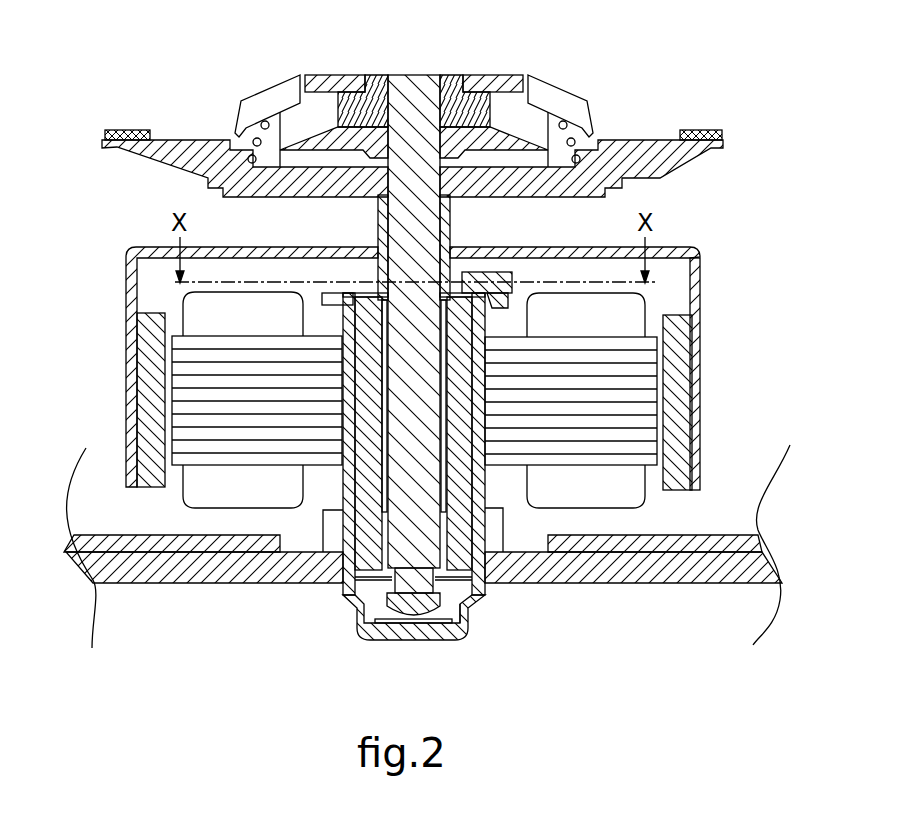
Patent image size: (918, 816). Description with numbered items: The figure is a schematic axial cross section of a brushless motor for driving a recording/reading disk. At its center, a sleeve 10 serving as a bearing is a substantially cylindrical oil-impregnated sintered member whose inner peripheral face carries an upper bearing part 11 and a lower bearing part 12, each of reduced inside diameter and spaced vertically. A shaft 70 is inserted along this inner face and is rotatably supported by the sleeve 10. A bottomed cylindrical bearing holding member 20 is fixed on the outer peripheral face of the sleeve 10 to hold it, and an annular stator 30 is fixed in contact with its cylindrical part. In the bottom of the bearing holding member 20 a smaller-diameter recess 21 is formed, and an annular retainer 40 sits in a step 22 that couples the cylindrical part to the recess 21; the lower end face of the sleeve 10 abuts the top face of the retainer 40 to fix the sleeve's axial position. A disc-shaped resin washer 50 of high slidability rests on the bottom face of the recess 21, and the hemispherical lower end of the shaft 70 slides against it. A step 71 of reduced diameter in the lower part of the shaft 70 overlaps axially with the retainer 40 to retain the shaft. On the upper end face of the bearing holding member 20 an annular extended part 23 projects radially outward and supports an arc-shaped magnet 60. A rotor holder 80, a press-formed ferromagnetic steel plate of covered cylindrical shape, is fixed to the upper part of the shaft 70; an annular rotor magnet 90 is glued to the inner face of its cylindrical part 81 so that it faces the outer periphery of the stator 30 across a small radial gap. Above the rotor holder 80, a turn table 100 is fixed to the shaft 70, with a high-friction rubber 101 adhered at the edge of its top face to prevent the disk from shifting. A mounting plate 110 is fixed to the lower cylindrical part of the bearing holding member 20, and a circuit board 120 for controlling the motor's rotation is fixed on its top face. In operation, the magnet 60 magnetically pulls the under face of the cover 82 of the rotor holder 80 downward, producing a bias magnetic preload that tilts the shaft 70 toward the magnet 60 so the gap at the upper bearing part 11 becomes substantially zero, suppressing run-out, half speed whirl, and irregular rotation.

The sleeve 10 is at (470, 495).
The upper bearing part 11 is at (387, 300).
The lower bearing part 12 is at (383, 512).
The bearing holding member 20 is at (490, 487).
The recess 21 is at (433, 633).
The step 22 is at (458, 603).
The extended part 23 is at (343, 300).
The stator 30 is at (652, 293).
The retainer 40 is at (395, 600).
The washer 50 is at (387, 623).
The magnet 60 is at (497, 272).
The shaft 70 is at (428, 230).
The step 71 is at (390, 598).
The rotor holder 80 is at (140, 235).
The cylindrical part 81 is at (700, 322).
The cover 82 is at (600, 250).
The rotor magnet 90 is at (148, 372).
The turn table 100 is at (152, 165).
The rubber 101 is at (700, 130).
The mounting plate 110 is at (212, 575).
The circuit board 120 is at (672, 537).